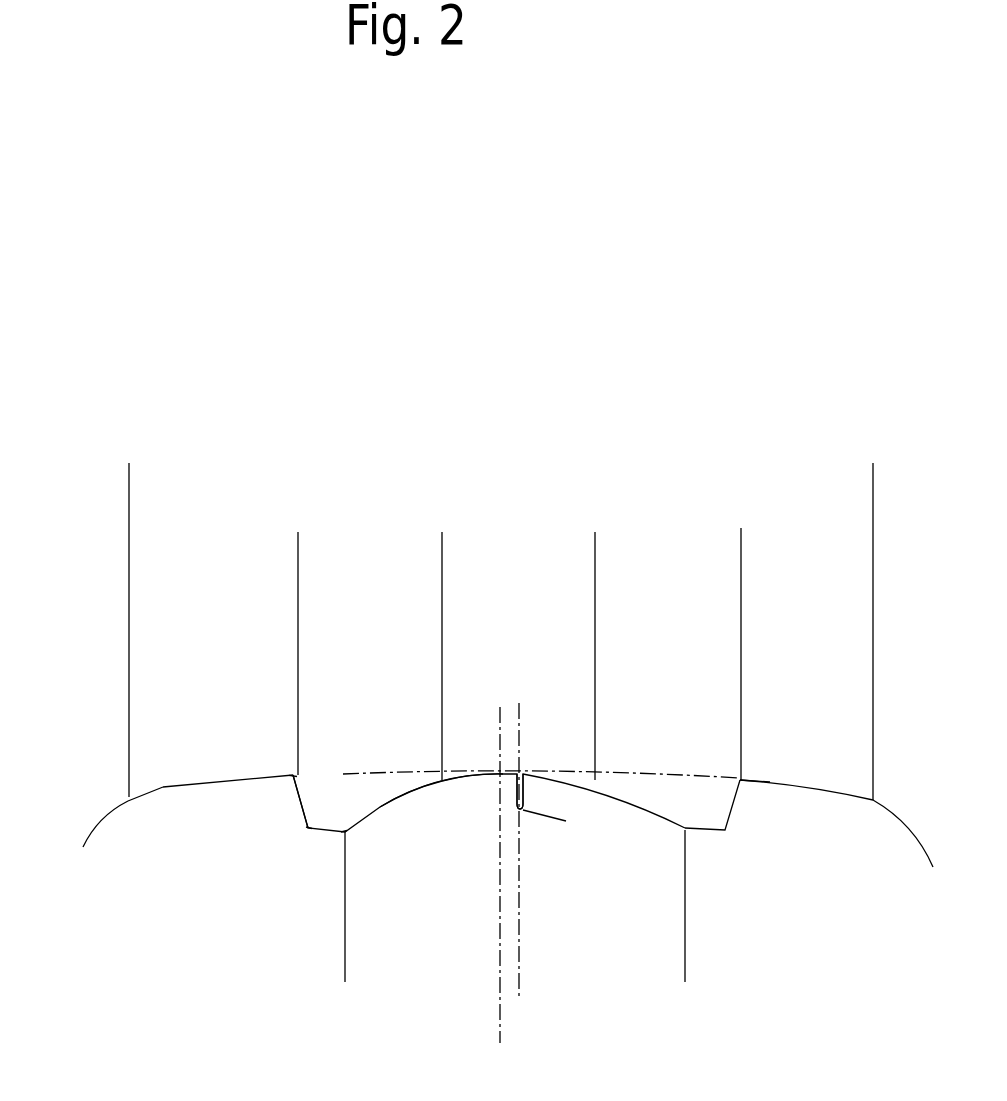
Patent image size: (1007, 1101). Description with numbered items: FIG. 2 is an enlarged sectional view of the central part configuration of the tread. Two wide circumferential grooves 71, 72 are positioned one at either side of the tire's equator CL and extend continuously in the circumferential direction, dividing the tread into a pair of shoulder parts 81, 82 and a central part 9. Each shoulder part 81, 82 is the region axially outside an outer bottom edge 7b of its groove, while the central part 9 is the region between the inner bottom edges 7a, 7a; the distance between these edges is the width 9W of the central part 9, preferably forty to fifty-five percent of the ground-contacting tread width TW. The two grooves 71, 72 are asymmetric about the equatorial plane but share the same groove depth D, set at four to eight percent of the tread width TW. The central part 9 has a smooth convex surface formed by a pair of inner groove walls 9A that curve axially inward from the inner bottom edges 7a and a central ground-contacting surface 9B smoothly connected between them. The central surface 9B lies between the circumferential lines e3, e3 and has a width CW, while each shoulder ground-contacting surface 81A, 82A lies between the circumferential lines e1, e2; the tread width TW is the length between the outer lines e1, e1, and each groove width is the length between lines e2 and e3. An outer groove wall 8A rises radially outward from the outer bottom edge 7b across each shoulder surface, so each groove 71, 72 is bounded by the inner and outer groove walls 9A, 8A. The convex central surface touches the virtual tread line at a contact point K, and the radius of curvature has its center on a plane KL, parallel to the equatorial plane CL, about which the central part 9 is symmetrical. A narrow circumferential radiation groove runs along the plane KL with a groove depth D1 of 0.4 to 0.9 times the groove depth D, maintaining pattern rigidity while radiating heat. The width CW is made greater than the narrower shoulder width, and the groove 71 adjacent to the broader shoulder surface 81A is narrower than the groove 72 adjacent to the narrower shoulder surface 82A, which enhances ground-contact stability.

The circumferential line e1 is at (122, 795).
The circumferential line e2 is at (292, 773).
The circumferential line e3 is at (430, 780).
The shoulder part 81 is at (163, 787).
The shoulder ground-contacting surface 81A is at (215, 783).
The circumferential groove 71 is at (336, 798).
The outer groove wall 8A is at (308, 818).
The outer bottom edge 7b is at (310, 845).
The inner bottom edge 7a is at (335, 845).
The central part 9 is at (575, 770).
The inner groove wall 9A is at (377, 800).
The central ground-contacting surface 9B is at (463, 773).
The contact point K is at (525, 752).
The circumferential groove 72 is at (693, 797).
The shoulder part 82 is at (790, 783).
The shoulder ground-contacting surface 82A is at (763, 780).
The groove depth D is at (718, 781).
The groove depth D1 is at (564, 786).
The tire equator CL is at (498, 925).
The plane KL is at (519, 890).
The width of the central part 9W is at (345, 973).
The ground-contacting tread width TW is at (129, 472).
The width of the central ground-contacting surface CW is at (595, 542).